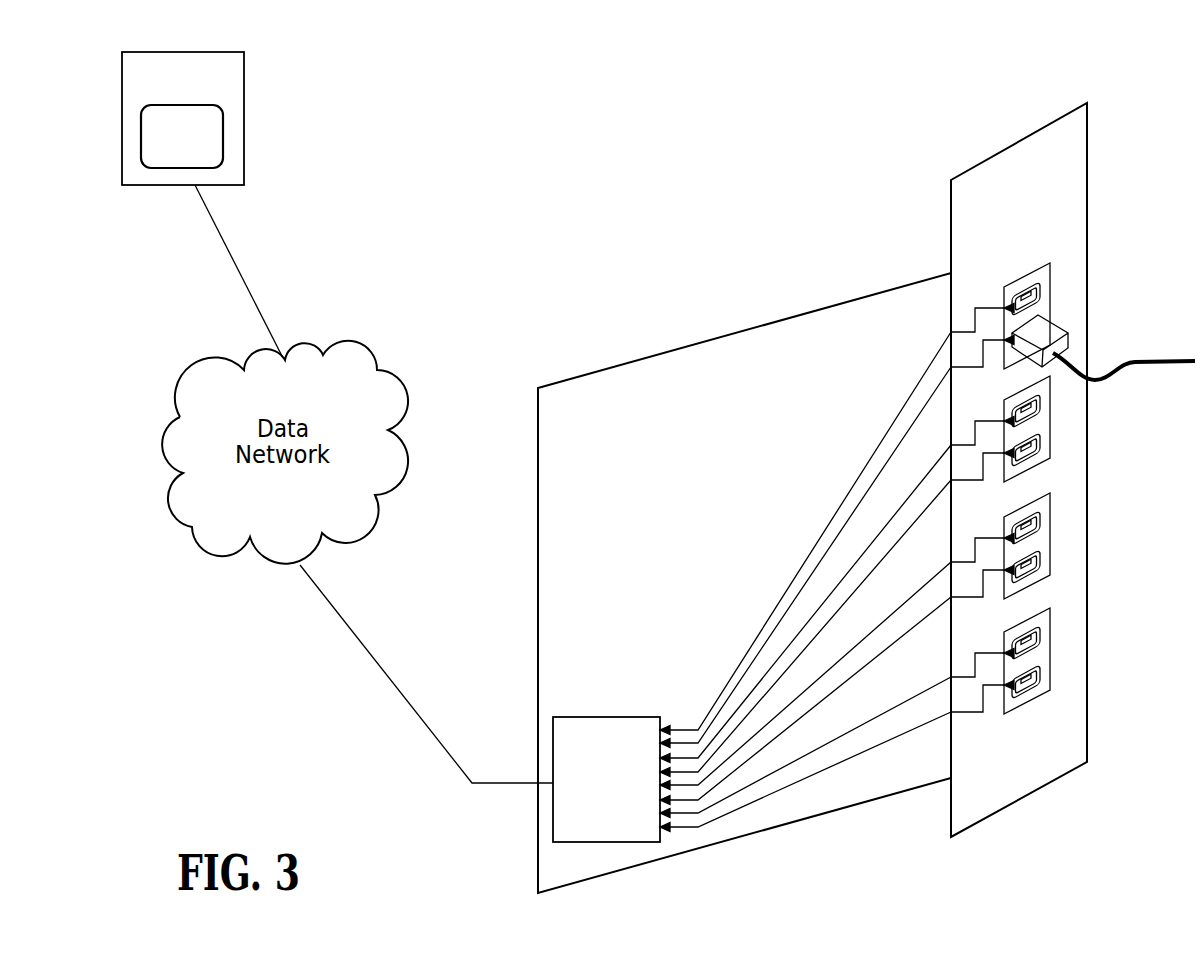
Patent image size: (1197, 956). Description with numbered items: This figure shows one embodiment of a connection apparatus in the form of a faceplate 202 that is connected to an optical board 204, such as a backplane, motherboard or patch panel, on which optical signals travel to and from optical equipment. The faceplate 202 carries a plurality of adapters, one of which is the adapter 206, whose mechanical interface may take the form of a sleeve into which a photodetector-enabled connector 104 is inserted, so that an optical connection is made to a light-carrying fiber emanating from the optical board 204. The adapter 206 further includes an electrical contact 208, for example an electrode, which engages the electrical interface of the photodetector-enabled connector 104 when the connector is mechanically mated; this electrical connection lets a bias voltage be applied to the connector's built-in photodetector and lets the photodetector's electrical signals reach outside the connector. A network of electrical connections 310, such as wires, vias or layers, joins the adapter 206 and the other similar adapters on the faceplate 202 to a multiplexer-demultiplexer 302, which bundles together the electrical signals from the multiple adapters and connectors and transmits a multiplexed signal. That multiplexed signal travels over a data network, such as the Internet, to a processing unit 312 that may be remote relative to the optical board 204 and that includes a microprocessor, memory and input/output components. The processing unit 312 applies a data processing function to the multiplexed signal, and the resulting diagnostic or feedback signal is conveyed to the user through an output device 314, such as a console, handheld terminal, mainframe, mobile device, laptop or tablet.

The output device 314 is at (205, 84).
The processing unit 312 is at (205, 151).
The multiplexer-demultiplexer 302 is at (629, 794).
The optical board 204 is at (610, 366).
The faceplate 202 is at (1008, 147).
The electrical contact 208 is at (1026, 292).
The adapter 206 is at (1040, 288).
The photodetector-enabled connector 104 is at (1050, 331).
The network of electrical connections 310 is at (790, 584).